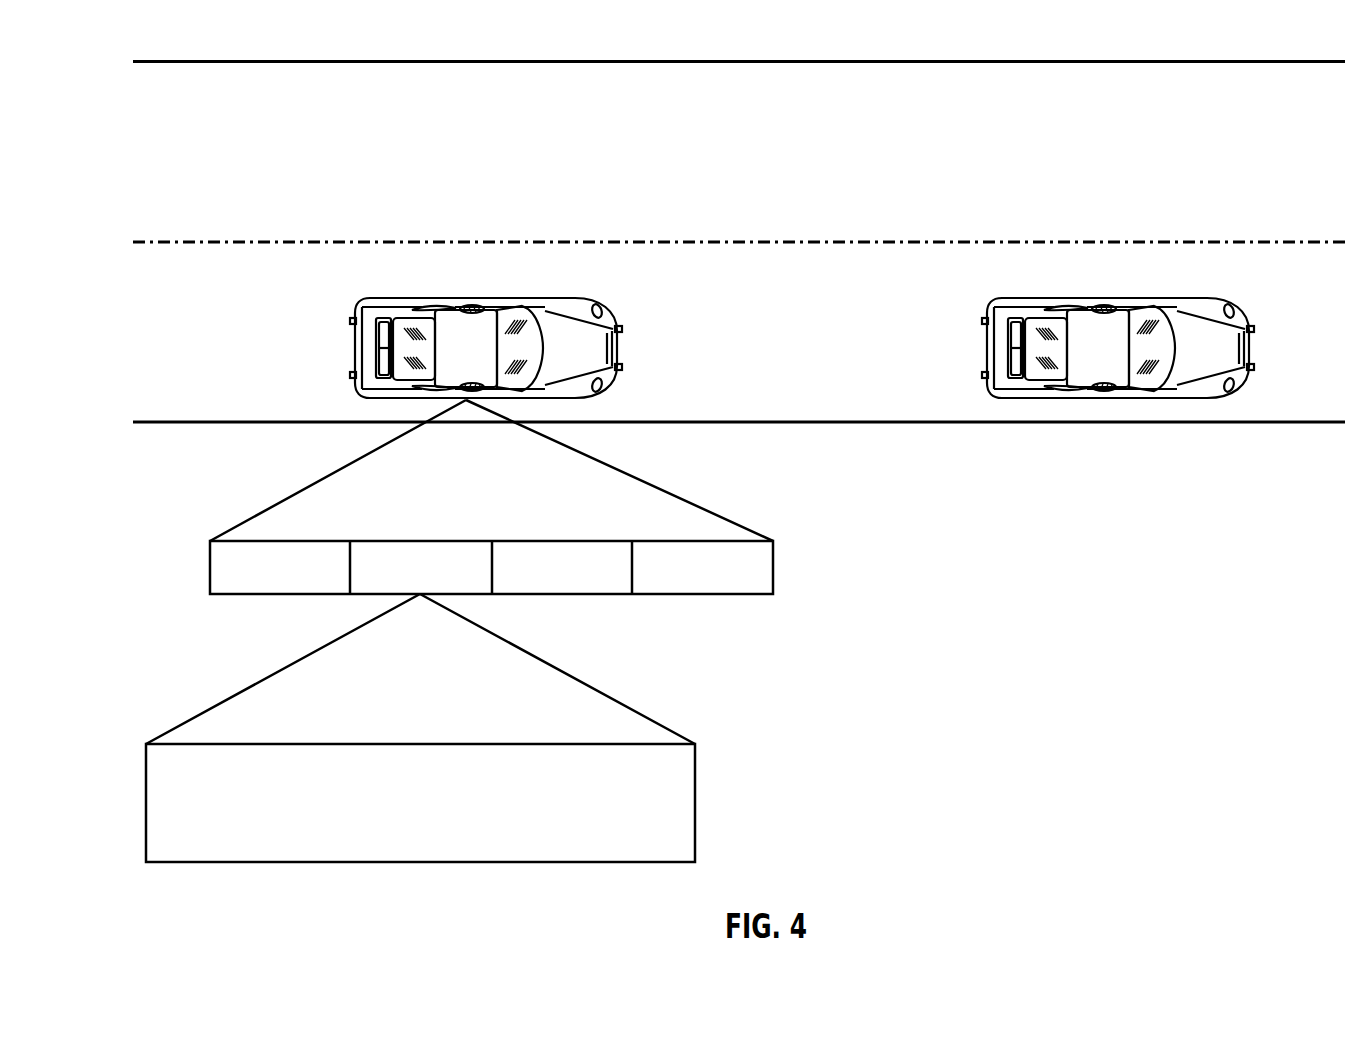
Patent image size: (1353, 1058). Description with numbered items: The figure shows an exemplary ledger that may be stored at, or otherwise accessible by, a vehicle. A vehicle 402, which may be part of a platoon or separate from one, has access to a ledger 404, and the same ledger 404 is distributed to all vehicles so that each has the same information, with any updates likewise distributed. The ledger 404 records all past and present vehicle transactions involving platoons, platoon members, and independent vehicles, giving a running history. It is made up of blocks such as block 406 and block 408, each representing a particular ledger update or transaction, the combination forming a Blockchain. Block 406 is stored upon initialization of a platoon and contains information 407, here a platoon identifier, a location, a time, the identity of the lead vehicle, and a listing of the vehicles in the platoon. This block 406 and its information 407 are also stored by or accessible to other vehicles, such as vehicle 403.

The vehicle 402 is at (440, 298).
The vehicle 403 is at (1074, 298).
The ledger 404 is at (183, 550).
The block 406 is at (424, 540).
The information 407 is at (401, 752).
The block 408 is at (564, 540).